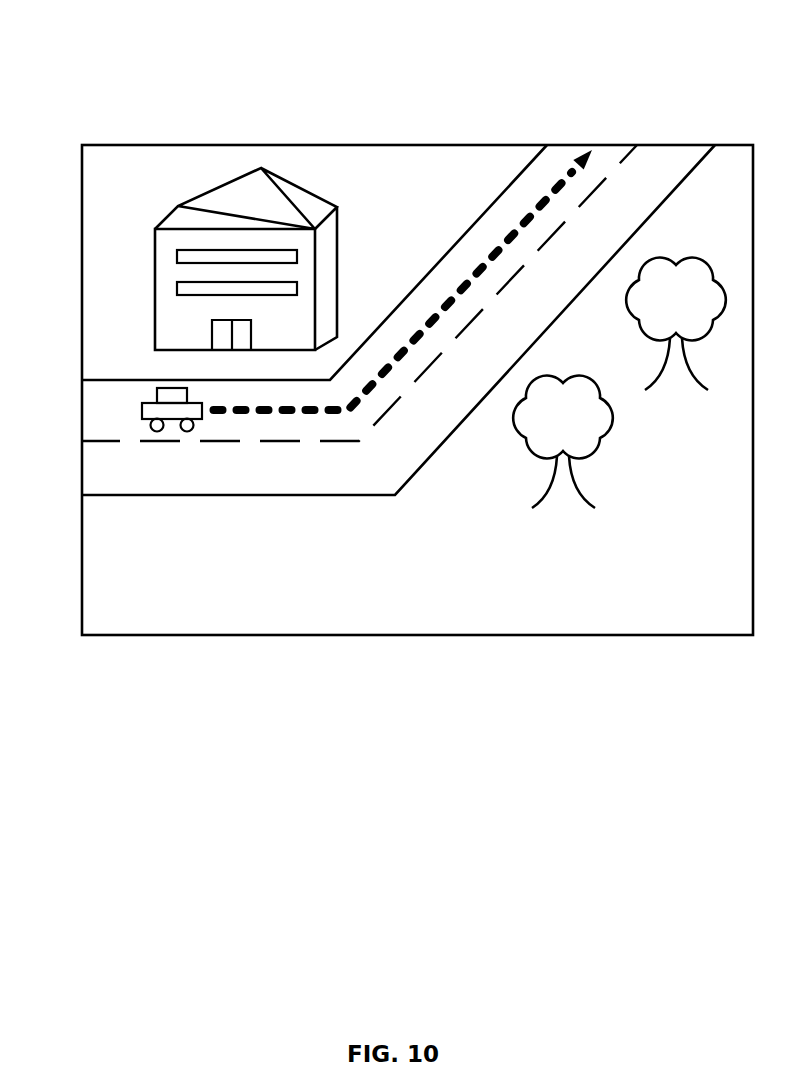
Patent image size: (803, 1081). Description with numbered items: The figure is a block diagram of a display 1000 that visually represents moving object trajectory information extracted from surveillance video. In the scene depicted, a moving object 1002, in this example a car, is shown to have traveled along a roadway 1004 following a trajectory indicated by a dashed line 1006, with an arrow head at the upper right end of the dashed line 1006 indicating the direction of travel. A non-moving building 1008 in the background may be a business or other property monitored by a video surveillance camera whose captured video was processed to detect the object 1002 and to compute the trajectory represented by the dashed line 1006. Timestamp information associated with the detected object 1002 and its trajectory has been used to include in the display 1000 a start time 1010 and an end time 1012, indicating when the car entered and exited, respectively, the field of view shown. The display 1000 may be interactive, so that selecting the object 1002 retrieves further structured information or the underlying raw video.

The display 1000 is at (132, 54).
The moving object 1002 is at (187, 432).
The roadway 1004 is at (348, 497).
The dashed line 1006 is at (388, 367).
The non-moving building 1008 is at (338, 240).
The start time 1010 is at (173, 552).
The end time 1012 is at (410, 164).